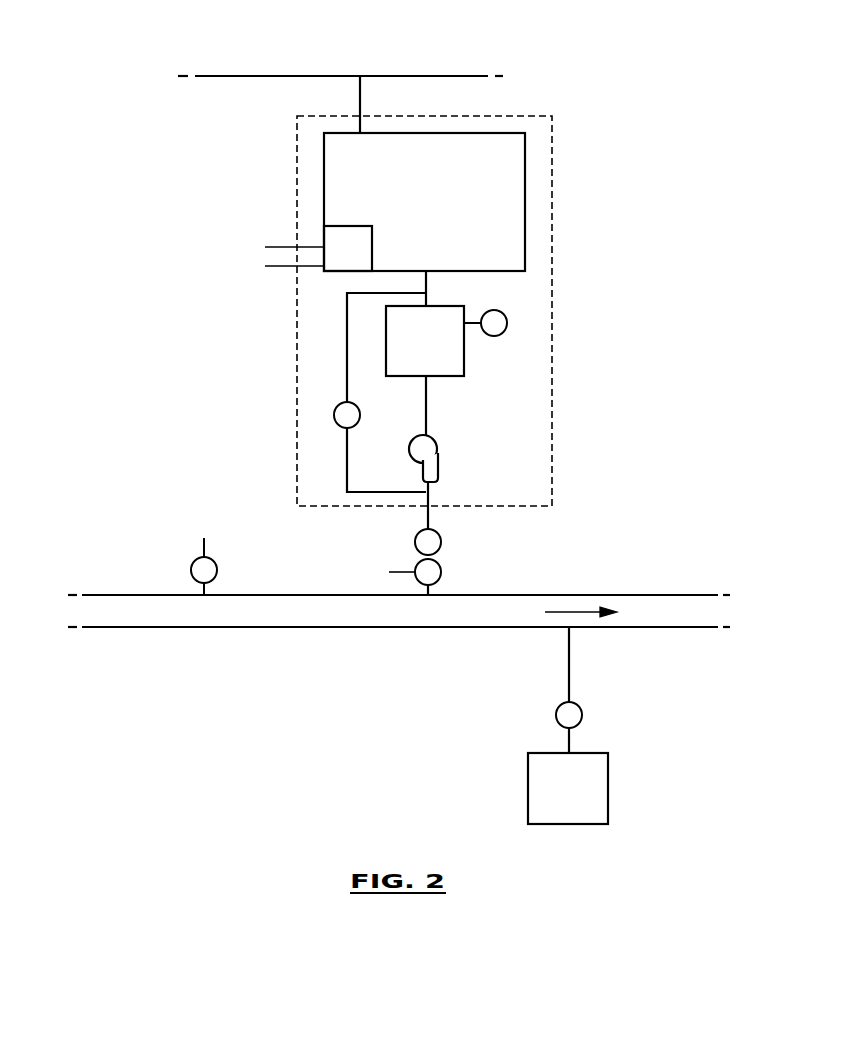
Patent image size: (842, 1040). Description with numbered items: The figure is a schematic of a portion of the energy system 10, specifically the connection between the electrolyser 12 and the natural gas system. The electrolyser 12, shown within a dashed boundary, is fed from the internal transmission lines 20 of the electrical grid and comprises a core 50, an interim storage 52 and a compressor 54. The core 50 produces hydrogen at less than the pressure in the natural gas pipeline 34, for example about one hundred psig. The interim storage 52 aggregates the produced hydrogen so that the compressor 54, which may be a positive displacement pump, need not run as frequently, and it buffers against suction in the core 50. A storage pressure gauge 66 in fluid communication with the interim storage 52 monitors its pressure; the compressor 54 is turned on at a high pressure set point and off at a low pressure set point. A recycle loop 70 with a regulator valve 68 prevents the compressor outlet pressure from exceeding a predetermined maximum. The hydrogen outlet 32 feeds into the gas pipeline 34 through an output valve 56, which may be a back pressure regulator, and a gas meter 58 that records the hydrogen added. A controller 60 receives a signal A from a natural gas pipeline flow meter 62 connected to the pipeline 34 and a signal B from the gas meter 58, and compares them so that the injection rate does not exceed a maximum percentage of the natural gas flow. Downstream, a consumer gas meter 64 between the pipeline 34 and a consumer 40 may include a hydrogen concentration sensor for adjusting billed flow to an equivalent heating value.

The energy system 10 is at (172, 352).
The electrolyser 12 is at (552, 292).
The internal transmission lines 20 is at (418, 76).
The hydrogen outlet 32 is at (430, 515).
The pipeline 34 is at (680, 627).
The gas consumer 40 is at (608, 778).
The core 50 is at (525, 188).
The interim storage 52 is at (464, 356).
The compressor 54 is at (438, 462).
The output valve 56 is at (441, 543).
The gas meter 58 is at (441, 572).
The controller 60 is at (324, 237).
The natural gas pipeline flow meter 62 is at (217, 570).
The consumer gas meter 64 is at (582, 715).
The storage pressure gauge 66 is at (507, 330).
The regulator valve 68 is at (334, 415).
The recycle loop 70 is at (347, 468).